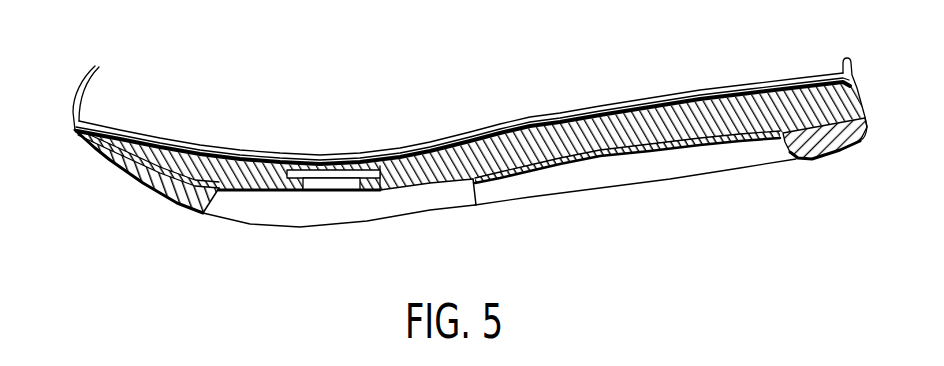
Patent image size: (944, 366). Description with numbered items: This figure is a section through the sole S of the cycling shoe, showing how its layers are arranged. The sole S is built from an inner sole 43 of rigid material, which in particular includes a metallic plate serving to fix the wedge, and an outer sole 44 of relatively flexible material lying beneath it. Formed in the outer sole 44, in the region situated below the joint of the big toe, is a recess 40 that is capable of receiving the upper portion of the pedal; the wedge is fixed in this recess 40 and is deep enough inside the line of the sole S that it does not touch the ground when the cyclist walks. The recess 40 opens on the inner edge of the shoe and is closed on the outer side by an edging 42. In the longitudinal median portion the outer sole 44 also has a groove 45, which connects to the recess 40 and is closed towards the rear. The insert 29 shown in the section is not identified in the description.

The insert plate 29 is at (336, 186).
The recess 40 is at (300, 207).
The edging 42 is at (357, 221).
The inner sole 43 is at (588, 130).
The outer sole 44 is at (817, 145).
The groove 45 is at (630, 170).
The sole S is at (176, 215).